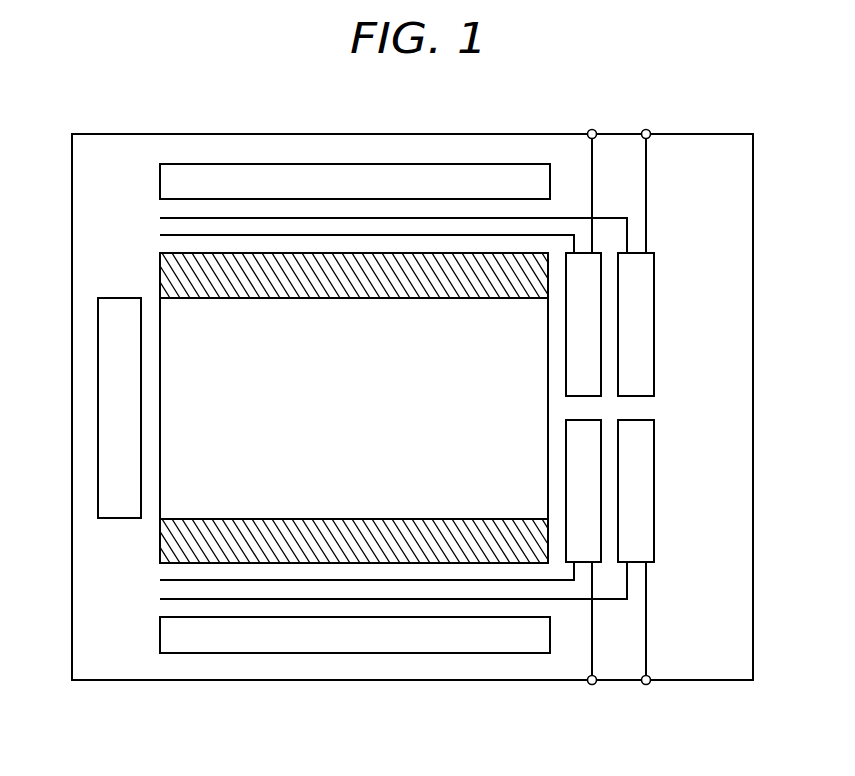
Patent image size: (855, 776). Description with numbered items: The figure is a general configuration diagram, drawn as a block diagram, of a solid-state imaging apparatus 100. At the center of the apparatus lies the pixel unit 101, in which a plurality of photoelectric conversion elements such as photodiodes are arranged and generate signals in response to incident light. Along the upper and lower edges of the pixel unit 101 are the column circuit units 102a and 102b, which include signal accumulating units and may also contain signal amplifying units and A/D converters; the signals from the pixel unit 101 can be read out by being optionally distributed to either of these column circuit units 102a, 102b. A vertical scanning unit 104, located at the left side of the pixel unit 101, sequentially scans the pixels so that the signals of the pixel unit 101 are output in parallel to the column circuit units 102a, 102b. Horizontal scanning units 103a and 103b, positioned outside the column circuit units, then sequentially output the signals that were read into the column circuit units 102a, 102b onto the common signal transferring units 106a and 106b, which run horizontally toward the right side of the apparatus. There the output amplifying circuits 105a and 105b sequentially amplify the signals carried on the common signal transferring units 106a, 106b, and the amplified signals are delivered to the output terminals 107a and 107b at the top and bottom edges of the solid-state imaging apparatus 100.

The solid-state imaging apparatus 100 is at (753, 195).
The pixel unit 101 is at (538, 414).
The column circuit unit 102a is at (160, 535).
The column circuit unit 102b is at (160, 283).
The horizontal scanning unit 103a is at (160, 635).
The horizontal scanning unit 103b is at (160, 182).
The vertical scanning unit 104 is at (98, 322).
The output amplifying circuit 105a is at (665, 420).
The output amplifying circuit 105b is at (665, 253).
The common signal transferring unit 106a is at (158, 572).
The common signal transferring unit 106b is at (158, 210).
The output terminal 107a is at (655, 692).
The output terminal 107b is at (655, 125).